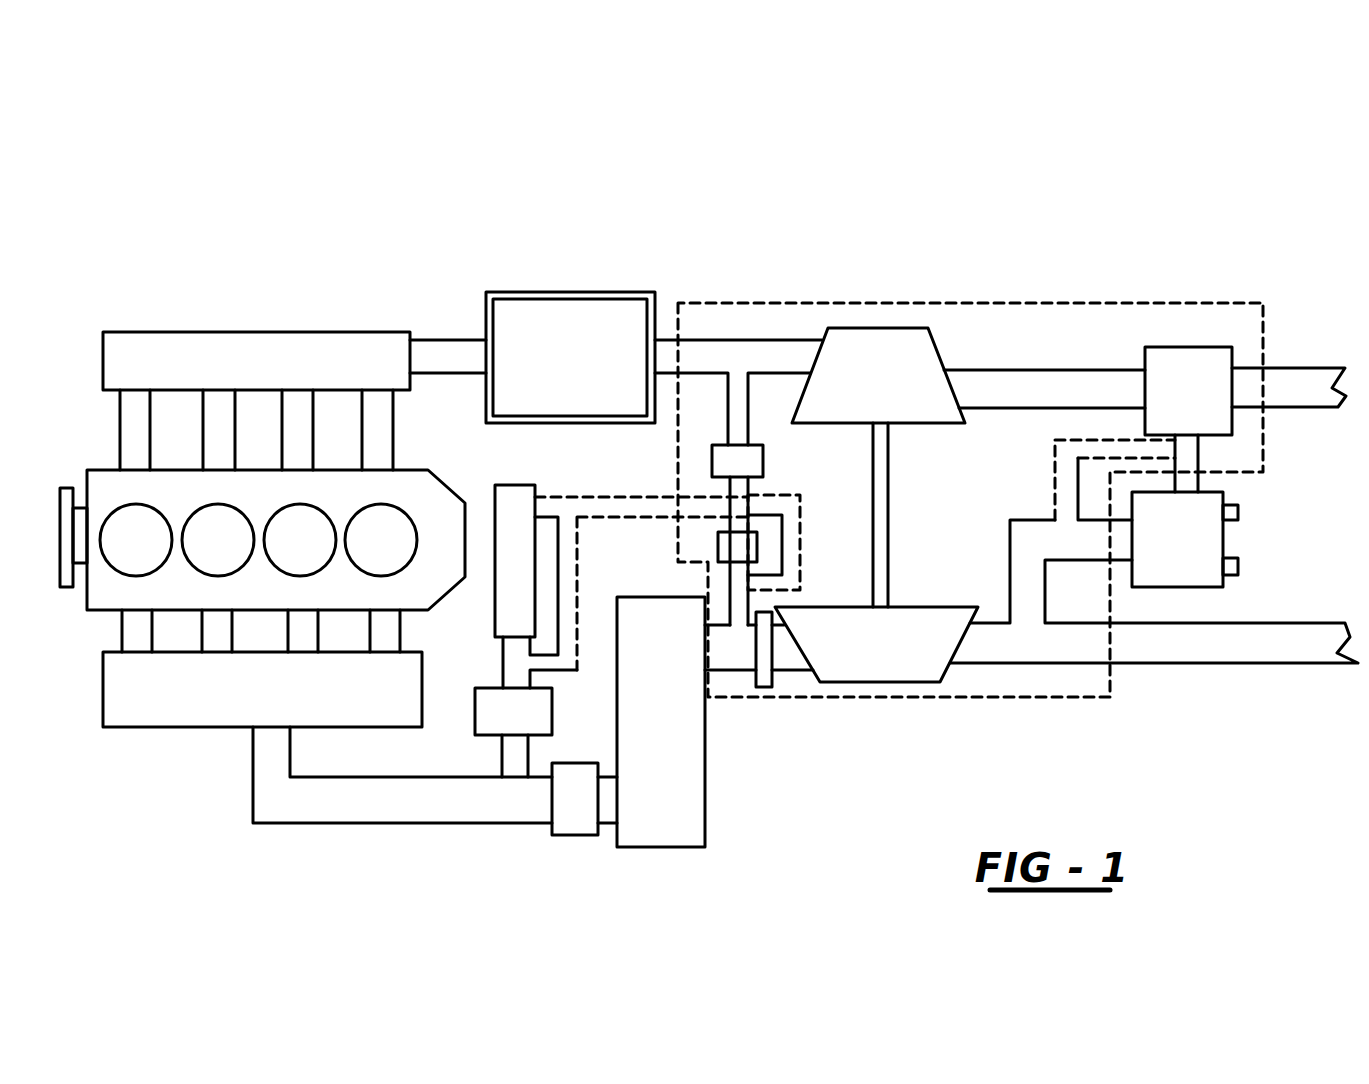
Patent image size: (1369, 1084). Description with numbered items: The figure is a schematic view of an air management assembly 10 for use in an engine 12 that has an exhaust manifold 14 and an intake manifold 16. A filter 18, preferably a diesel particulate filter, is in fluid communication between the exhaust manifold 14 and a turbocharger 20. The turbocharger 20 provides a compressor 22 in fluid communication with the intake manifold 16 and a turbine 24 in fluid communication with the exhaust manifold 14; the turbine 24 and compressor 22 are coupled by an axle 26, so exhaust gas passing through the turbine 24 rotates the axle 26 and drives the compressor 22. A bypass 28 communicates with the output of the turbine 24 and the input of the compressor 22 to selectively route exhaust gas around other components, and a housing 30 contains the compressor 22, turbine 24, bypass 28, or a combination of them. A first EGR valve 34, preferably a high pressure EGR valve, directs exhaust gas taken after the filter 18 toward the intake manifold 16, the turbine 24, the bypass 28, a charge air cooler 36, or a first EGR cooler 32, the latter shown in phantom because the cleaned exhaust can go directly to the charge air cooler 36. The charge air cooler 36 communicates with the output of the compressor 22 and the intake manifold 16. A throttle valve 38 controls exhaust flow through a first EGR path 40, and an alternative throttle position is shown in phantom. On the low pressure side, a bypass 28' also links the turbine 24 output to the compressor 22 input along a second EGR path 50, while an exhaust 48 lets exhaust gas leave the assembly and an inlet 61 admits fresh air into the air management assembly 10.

The air management assembly 10 is at (705, 193).
The engine 12 is at (95, 613).
The exhaust manifold 14 is at (227, 332).
The intake manifold 16 is at (133, 728).
The filter 18 is at (548, 292).
The turbocharger 20 is at (896, 476).
The compressor 22 is at (870, 682).
The turbine 24 is at (845, 328).
The axle 26 is at (890, 537).
The bypass 28 is at (682, 586).
The bypass 28' is at (1073, 480).
The housing 30 is at (1170, 303).
The first EGR cooler 32 is at (758, 547).
The first EGR valve 34 is at (712, 463).
The charge air cooler 36 is at (705, 793).
The throttle valve 38 is at (760, 690).
The first EGR path 40 is at (750, 423).
The exhaust 48 is at (1310, 368).
The second EGR path 50 is at (1198, 480).
The inlet 61 is at (1277, 665).